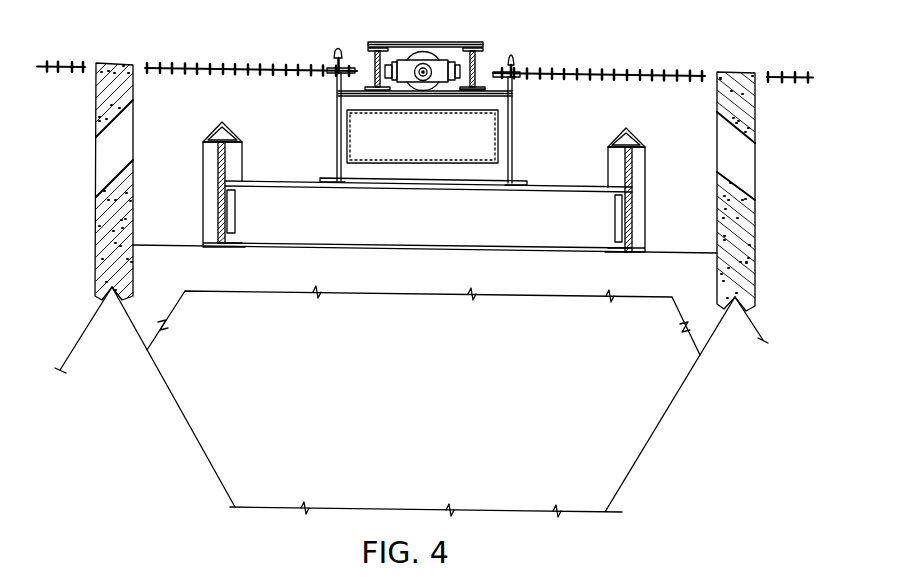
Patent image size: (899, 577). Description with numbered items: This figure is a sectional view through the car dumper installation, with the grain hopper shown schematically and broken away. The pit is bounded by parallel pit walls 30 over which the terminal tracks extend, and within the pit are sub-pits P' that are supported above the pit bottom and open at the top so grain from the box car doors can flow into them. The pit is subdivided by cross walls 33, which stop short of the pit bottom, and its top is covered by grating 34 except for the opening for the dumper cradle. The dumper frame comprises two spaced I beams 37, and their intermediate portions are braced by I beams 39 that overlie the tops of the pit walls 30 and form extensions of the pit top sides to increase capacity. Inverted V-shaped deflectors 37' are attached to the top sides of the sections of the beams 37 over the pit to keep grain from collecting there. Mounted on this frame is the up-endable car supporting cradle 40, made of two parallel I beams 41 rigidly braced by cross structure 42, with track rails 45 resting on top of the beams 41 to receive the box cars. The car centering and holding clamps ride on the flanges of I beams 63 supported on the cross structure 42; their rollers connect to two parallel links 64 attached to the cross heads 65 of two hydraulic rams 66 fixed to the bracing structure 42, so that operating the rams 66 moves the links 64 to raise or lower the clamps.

The pit walls 30 is at (375, 278).
The cross walls 33 is at (133, 205).
The grating 34 is at (247, 66).
The I beams 37 is at (443, 197).
The inverted V-shaped deflectors 37' is at (430, 123).
The I beams 39 is at (303, 215).
The car supporting cradle 40 is at (517, 138).
The I beams 41 is at (337, 140).
The cross structure 42 is at (428, 153).
The track rails 45 is at (337, 50).
The I beams 63 is at (483, 65).
The links 64 is at (394, 62).
The cross heads 65 is at (405, 76).
The hydraulic rams 66 is at (430, 86).
The sub-pits P' is at (411, 402).